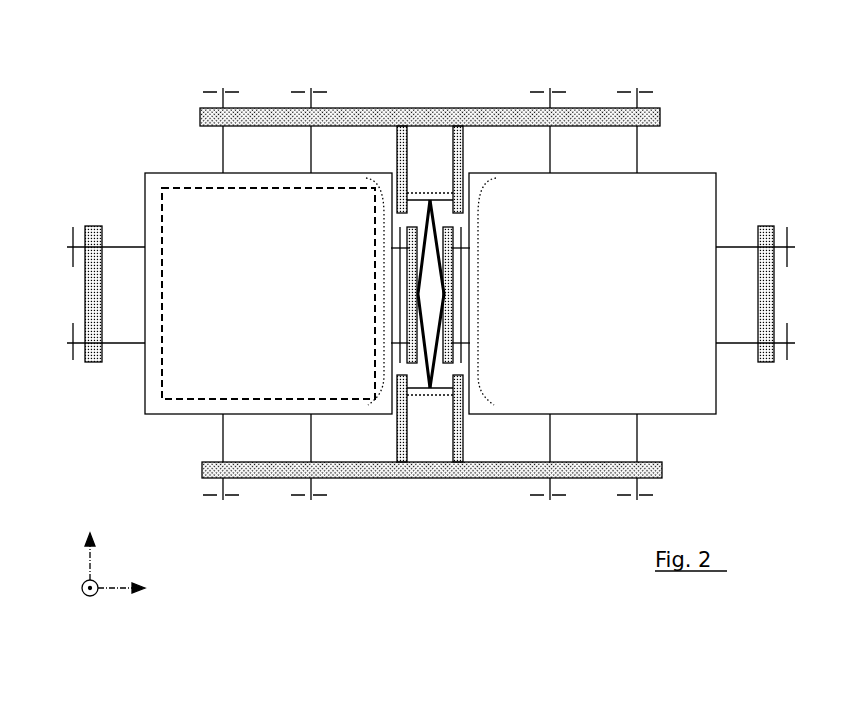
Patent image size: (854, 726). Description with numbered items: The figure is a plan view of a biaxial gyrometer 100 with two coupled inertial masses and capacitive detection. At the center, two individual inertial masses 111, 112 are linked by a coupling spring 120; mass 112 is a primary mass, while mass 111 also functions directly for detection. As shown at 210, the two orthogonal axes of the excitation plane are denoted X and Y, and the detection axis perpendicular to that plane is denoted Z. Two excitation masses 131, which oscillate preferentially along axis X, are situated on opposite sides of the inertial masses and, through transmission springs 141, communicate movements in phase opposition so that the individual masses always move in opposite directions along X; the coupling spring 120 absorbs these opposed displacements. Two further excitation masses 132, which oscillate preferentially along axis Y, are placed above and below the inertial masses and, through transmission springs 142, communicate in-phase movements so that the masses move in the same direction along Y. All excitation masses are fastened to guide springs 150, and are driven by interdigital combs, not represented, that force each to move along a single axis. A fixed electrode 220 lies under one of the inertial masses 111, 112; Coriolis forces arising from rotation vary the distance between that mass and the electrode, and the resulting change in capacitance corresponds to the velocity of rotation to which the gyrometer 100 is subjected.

The gyrometer 100 is at (104, 60).
The individual inertial mass 111 is at (165, 172).
The individual inertial mass 112 is at (687, 173).
The coupling spring 120 is at (477, 382).
The excitation mass 131 is at (88, 225).
The excitation mass 132 is at (382, 108).
The transmission spring 141 is at (125, 248).
The transmission spring 142 is at (310, 145).
The guide spring 150 is at (312, 88).
The axis convention 210 is at (68, 514).
The fixed electrode 220 is at (195, 400).